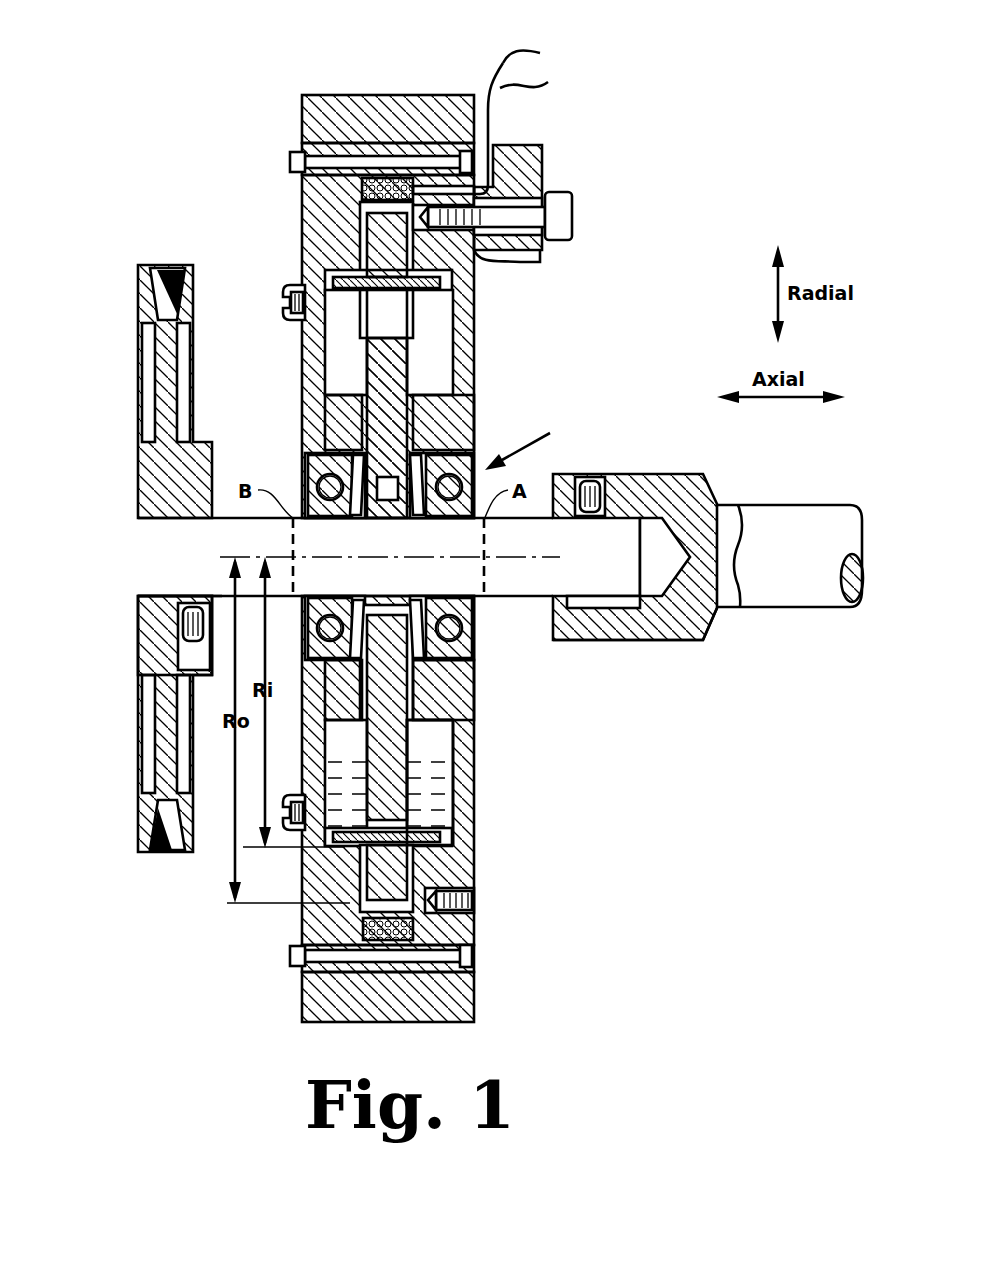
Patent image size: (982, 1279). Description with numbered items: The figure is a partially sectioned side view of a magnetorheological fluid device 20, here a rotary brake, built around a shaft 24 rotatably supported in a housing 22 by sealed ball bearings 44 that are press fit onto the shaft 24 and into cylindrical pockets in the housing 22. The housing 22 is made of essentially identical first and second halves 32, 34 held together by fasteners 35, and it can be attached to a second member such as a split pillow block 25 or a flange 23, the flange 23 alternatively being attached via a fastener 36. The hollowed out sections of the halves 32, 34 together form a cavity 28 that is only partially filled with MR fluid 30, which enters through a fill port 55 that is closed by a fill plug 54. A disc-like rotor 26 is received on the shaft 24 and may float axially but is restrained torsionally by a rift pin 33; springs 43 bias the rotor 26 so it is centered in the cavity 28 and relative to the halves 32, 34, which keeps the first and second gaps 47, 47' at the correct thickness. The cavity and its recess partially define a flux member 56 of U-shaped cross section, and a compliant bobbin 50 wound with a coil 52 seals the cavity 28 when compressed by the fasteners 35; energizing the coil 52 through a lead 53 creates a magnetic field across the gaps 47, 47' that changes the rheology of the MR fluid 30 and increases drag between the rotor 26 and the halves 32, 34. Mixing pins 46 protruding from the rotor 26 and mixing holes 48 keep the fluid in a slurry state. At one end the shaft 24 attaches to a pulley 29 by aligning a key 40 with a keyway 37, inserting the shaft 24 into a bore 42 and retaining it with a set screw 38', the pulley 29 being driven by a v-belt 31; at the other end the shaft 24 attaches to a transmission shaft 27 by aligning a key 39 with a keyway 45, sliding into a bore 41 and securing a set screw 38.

The magnetorheological fluid device 20 is at (447, 522).
The housing 22 is at (300, 198).
The flange 23 is at (548, 152).
The shaft 24 is at (508, 600).
The split pillow block 25 is at (343, 95).
The rotor 26 is at (410, 365).
The transmission shaft 27 is at (780, 505).
The cavity 28 is at (445, 310).
The pulley 29 is at (138, 640).
The MR fluid 30 is at (405, 790).
The v-belt 31 is at (157, 855).
The first half 32 is at (302, 920).
The rift pin 33 is at (388, 480).
The second half 34 is at (474, 942).
The fasteners 35 is at (466, 957).
The fastener 36 is at (572, 213).
The keyway 37 is at (172, 590).
The set screw 38 is at (626, 473).
The set screw 38' is at (129, 656).
The key 39 is at (598, 600).
The key 40 is at (140, 598).
The bore 41 is at (655, 522).
The bore 42 is at (140, 522).
The springs 43 is at (348, 462).
The bearings 44 is at (532, 446).
The keyway 45 is at (655, 642).
The mixing pins 46 is at (435, 812).
The first gap 47 is at (308, 213).
The second gap 47' is at (527, 271).
The mixing holes 48 is at (415, 775).
The bobbin 50 is at (448, 896).
The coil 52 is at (300, 152).
The lead 53 is at (520, 119).
The fill plug 54 is at (283, 300).
The fill port 55 is at (333, 277).
The flux member 56 is at (360, 882).